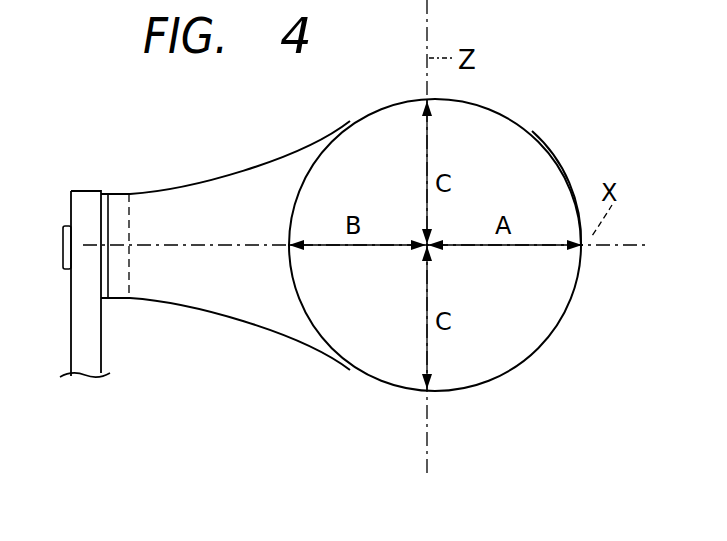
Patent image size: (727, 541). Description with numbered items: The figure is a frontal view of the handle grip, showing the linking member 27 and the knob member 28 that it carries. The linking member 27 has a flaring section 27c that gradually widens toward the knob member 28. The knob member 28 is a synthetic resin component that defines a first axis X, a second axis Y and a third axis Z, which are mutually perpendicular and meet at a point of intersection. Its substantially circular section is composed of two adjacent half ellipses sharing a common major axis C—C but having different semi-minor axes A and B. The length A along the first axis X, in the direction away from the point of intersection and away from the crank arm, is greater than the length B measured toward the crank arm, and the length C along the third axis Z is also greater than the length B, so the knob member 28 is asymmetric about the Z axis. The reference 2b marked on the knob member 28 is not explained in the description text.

The spherical bulb portion 2b is at (512, 123).
The linking member 27 is at (210, 178).
The flaring section 27c is at (95, 190).
The knob member 28 is at (553, 167).